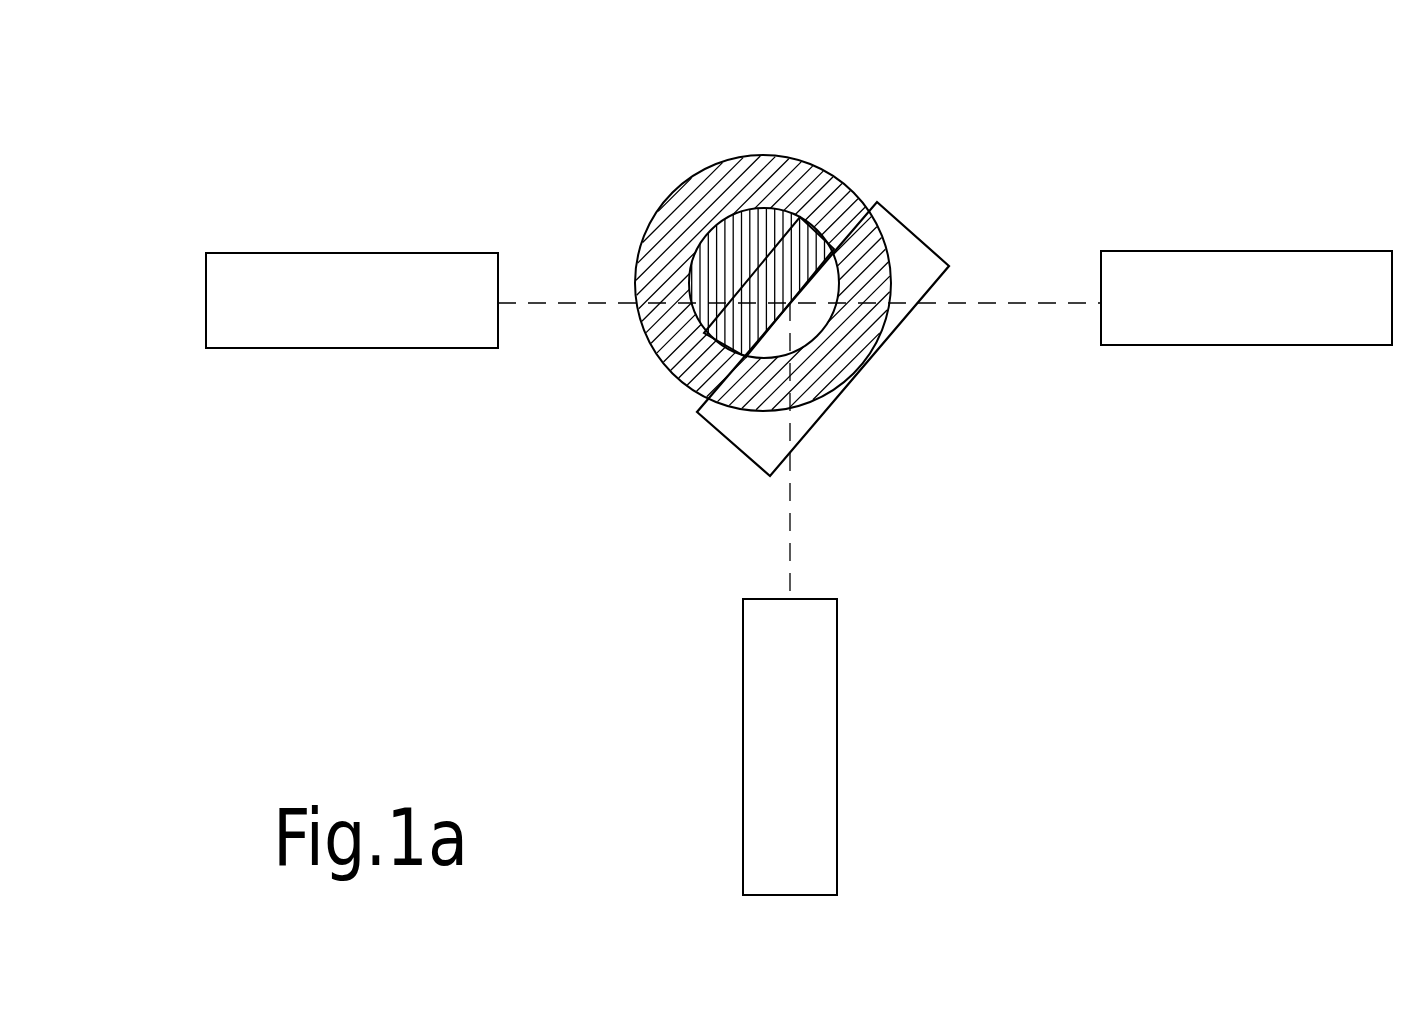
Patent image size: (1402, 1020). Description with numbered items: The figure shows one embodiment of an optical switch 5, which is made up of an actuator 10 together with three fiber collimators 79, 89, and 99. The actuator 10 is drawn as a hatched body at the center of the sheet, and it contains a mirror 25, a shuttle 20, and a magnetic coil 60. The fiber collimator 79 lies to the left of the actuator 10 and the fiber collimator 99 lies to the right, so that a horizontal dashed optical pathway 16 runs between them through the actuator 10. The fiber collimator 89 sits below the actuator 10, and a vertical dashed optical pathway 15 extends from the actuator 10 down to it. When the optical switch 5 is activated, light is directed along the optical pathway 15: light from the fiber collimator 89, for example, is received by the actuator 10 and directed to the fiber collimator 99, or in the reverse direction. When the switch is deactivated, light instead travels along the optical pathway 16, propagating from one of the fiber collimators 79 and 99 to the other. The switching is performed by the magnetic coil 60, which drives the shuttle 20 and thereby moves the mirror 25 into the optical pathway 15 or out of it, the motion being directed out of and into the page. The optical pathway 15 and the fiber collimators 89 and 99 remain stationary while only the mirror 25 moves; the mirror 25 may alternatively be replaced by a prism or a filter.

The optical switch 5 is at (1252, 160).
The actuator 10 is at (725, 230).
The shuttle 20 is at (748, 237).
The mirror 25 is at (812, 240).
The magnetic coil 60 is at (915, 256).
The optical pathway 16 is at (567, 303).
The optical pathway 15 is at (790, 547).
The fiber collimator 79 is at (336, 317).
The fiber collimator 89 is at (768, 767).
The fiber collimator 99 is at (1231, 313).